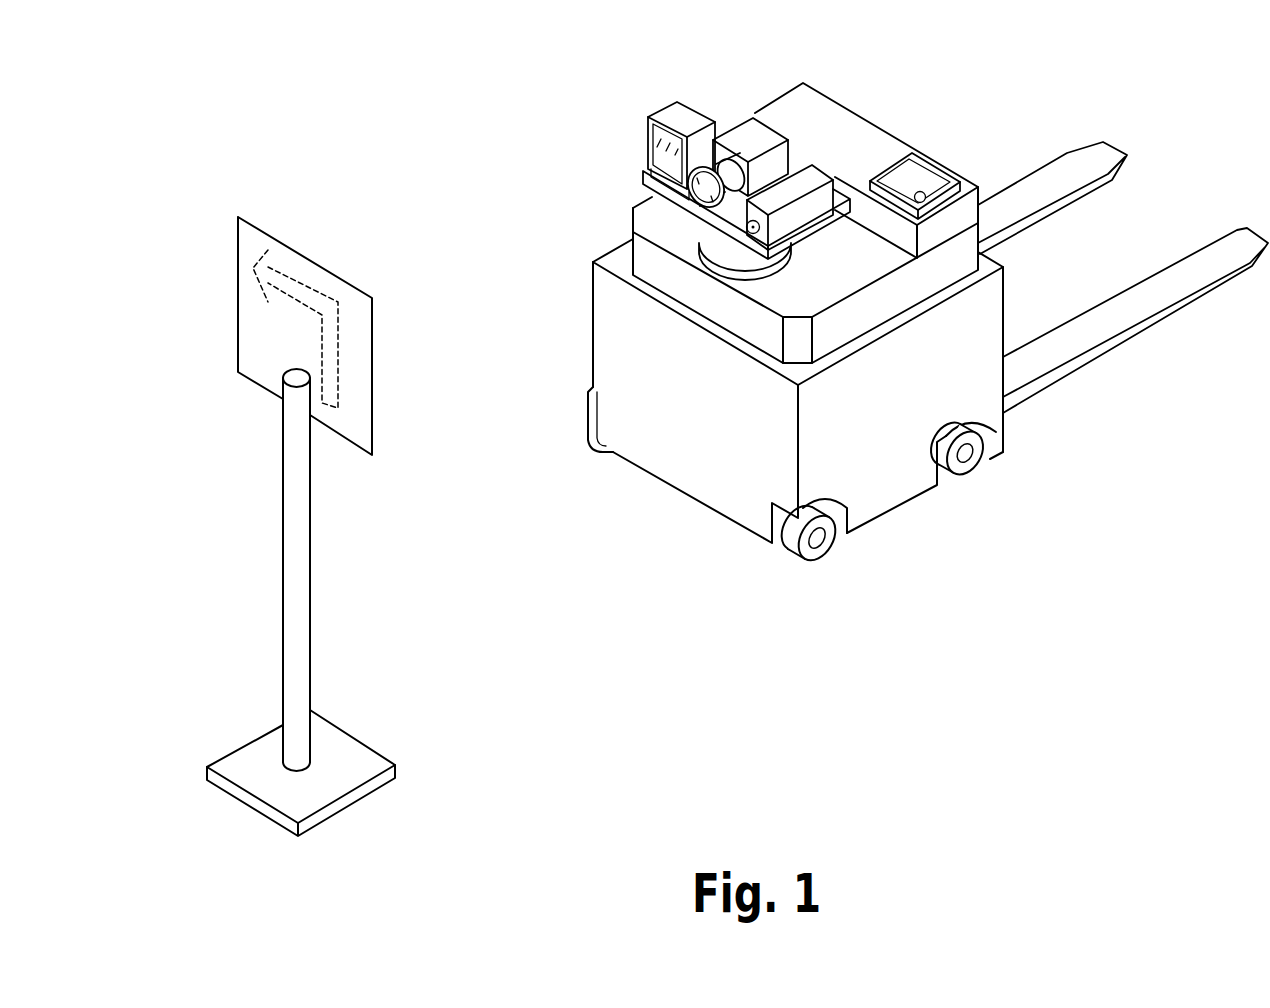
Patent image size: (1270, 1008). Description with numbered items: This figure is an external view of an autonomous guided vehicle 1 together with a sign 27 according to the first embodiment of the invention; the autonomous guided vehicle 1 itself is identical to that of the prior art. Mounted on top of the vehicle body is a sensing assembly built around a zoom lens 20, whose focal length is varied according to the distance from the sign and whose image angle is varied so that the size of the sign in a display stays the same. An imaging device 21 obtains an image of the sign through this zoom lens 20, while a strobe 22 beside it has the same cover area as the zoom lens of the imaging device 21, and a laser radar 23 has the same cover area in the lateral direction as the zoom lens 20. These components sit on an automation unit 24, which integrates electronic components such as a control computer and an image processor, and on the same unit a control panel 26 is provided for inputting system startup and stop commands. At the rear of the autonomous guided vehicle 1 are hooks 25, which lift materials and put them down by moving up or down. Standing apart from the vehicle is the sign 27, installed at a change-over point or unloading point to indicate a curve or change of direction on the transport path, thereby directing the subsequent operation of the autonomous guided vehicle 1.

The autonomous guided vehicle 1 is at (717, 472).
The zoom lens 20 is at (678, 213).
The imaging device 21 is at (732, 130).
The strobe 22 is at (672, 113).
The laser radar 23 is at (808, 180).
The automation unit 24 is at (805, 117).
The hooks 25 is at (1083, 330).
The control panel 26 is at (942, 182).
The sign 27 is at (311, 572).